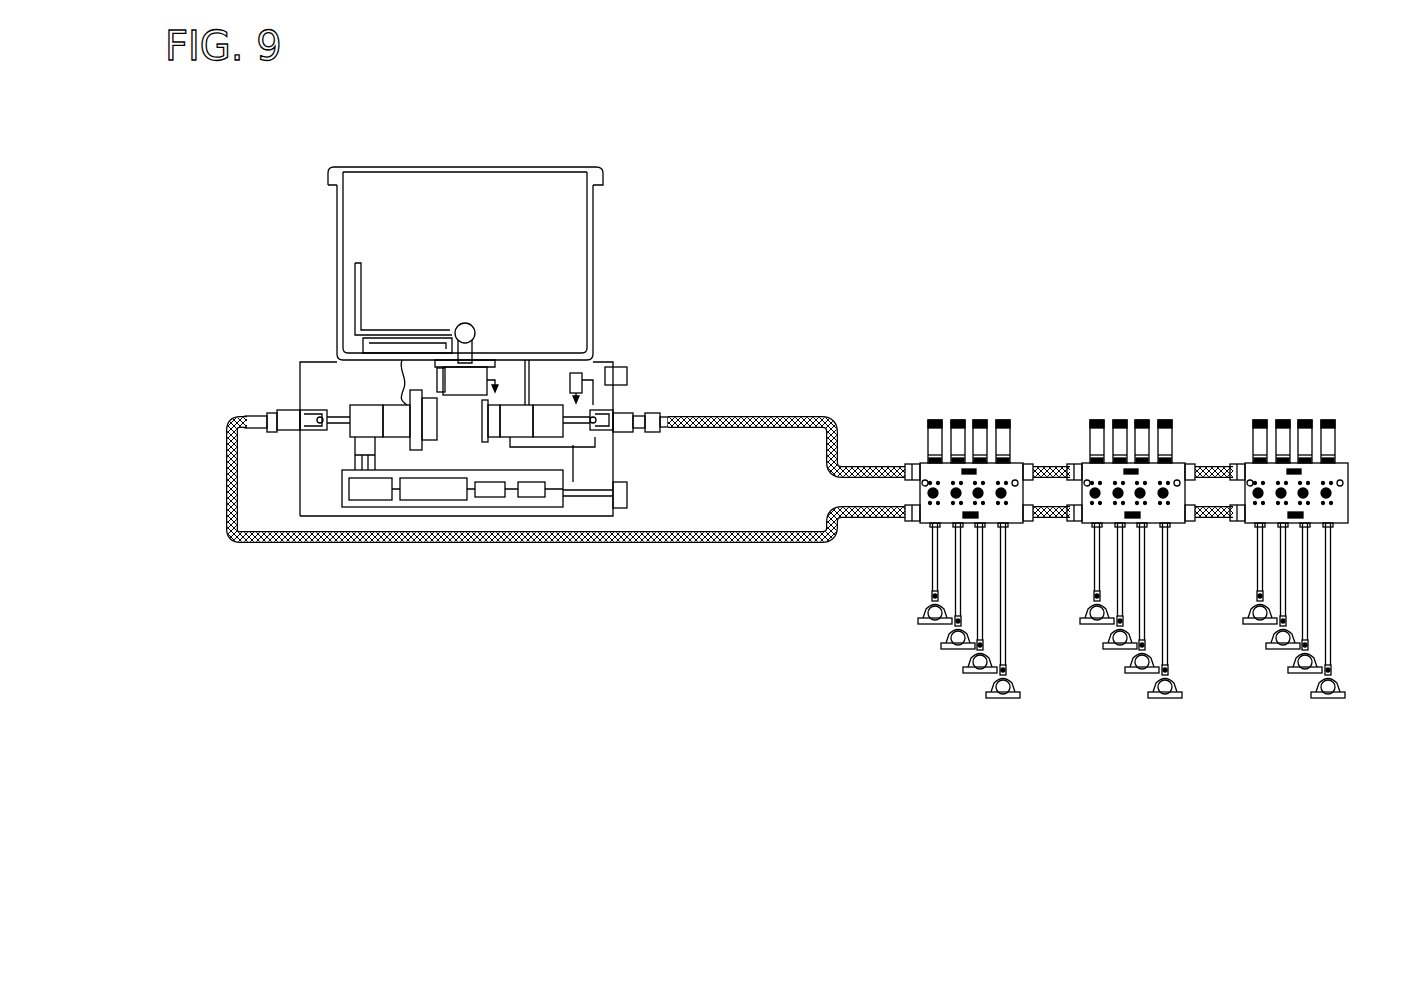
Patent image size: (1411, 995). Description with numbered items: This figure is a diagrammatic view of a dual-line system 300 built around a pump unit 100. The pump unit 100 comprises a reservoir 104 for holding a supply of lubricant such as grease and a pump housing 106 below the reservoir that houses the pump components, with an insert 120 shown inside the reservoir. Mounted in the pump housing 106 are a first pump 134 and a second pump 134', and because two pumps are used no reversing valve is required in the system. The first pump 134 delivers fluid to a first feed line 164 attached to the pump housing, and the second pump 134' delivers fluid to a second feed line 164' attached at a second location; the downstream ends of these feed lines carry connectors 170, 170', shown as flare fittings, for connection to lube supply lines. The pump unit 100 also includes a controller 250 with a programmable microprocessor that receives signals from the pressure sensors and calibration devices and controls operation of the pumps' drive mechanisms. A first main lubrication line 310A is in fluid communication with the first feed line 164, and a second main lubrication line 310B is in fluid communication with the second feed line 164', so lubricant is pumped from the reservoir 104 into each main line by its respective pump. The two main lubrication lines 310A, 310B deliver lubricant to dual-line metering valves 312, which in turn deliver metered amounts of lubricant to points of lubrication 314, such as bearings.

The pump unit 100 is at (611, 265).
The reservoir 104 is at (332, 218).
The pump housing 106 is at (331, 360).
The reservoir insert / follower plate 120 is at (375, 314).
The first pump 134 is at (538, 506).
The second pump 134' is at (298, 419).
The first feed line 164 is at (566, 365).
The second feed line 164' is at (269, 380).
The connector 170 is at (662, 392).
The connector 170' is at (223, 407).
The controller 250 is at (437, 505).
The dual-line system 300 is at (850, 224).
The first main lubrication line 310A is at (758, 416).
The second main lubrication line 310B is at (298, 545).
The dual-line metering valves 312 is at (1020, 461).
The points of lubrication 314 is at (1003, 698).